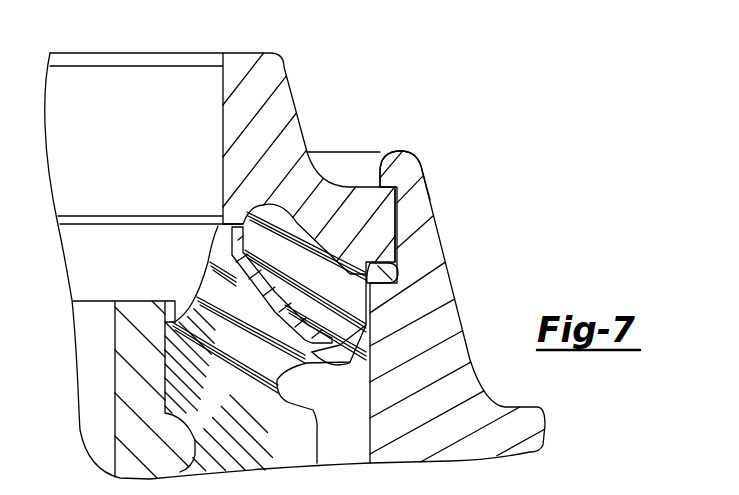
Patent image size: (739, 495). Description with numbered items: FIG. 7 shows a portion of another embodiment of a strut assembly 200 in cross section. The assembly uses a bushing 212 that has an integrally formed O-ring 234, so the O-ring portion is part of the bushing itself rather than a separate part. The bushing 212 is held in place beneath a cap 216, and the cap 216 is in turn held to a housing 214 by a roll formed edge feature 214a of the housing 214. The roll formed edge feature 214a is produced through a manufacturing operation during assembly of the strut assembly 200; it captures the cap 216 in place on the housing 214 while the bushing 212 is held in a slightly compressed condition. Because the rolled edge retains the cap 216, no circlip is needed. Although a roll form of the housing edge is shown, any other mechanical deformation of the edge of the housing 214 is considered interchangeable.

The strut assembly 200 is at (410, 68).
The bushing 212 is at (352, 322).
The housing 214 is at (427, 228).
The roll formed edge feature 214a is at (407, 172).
The cap 216 is at (268, 112).
The O-ring 234 is at (393, 277).